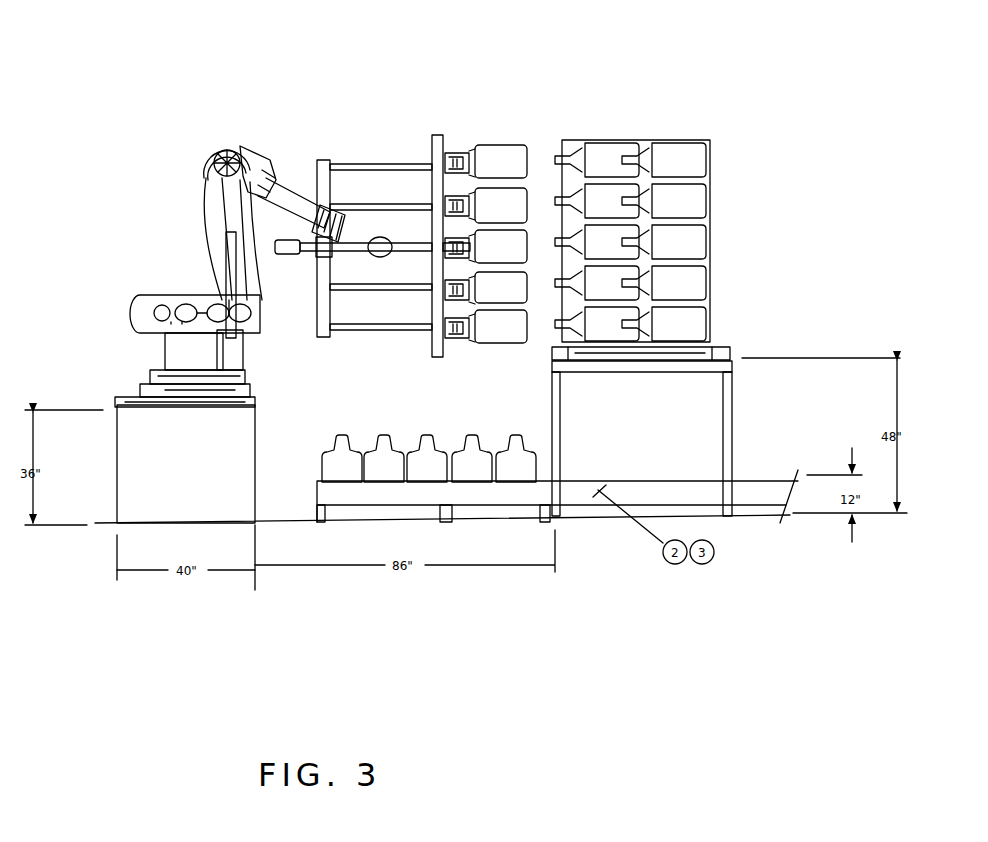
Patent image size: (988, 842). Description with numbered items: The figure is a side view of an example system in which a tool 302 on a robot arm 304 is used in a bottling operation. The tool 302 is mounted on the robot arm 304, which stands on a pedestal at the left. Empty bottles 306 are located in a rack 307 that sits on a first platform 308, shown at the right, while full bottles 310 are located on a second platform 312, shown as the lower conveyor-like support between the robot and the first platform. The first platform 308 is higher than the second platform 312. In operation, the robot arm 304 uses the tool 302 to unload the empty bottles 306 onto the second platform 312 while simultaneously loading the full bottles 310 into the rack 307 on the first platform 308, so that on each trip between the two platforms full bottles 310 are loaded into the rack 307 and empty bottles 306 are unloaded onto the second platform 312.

The tool 302 is at (386, 131).
The robot arm 304 is at (193, 162).
The empty bottles 306 is at (708, 195).
The rack 307 is at (638, 140).
The first platform 308 is at (733, 350).
The full bottles 310 is at (315, 462).
The second platform 312 is at (493, 512).